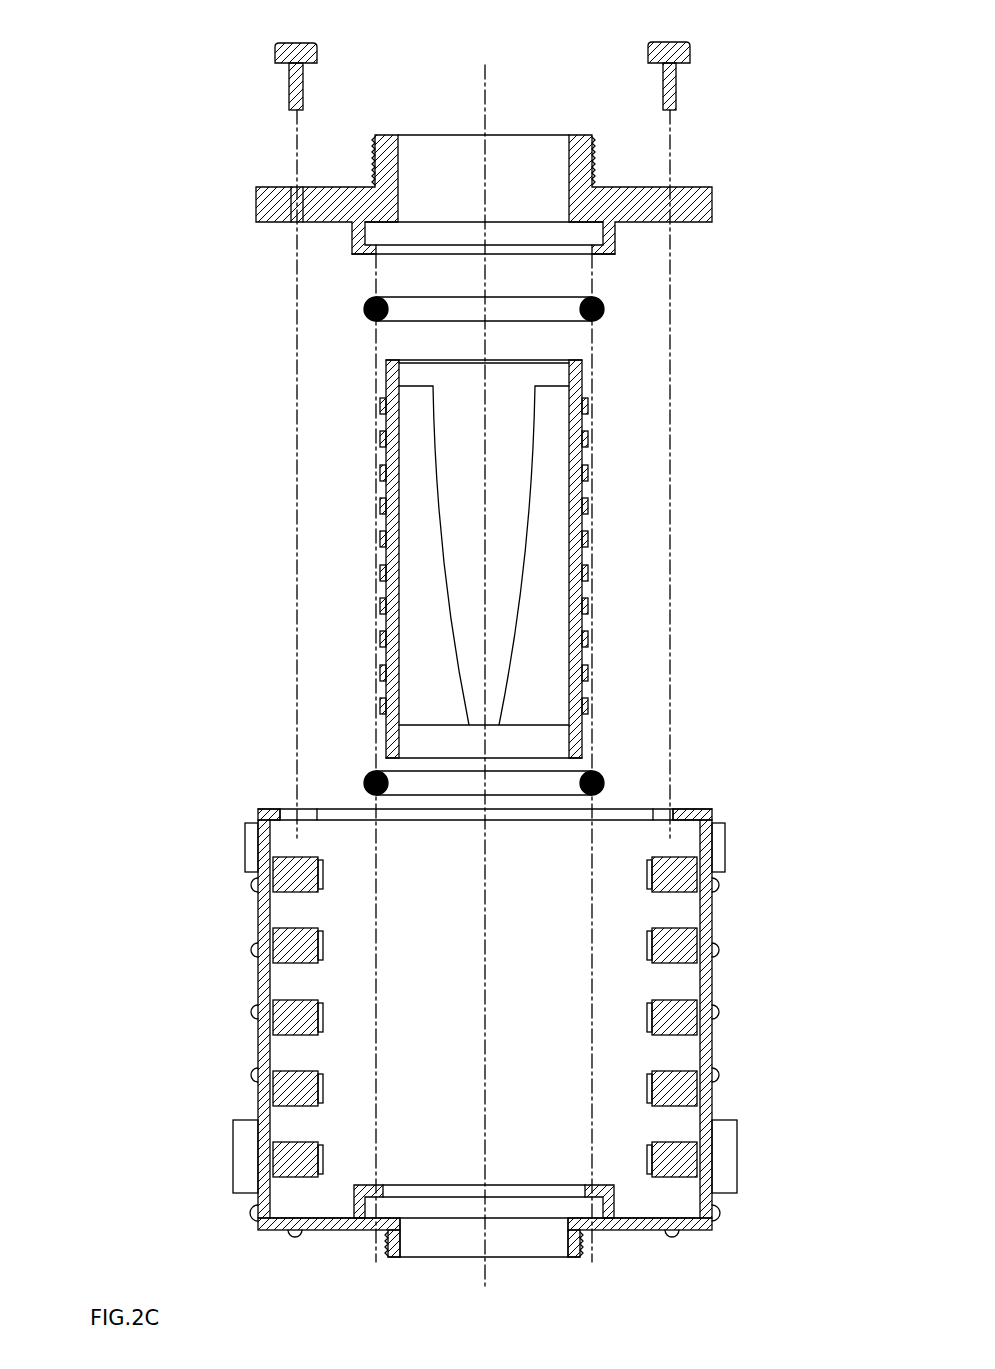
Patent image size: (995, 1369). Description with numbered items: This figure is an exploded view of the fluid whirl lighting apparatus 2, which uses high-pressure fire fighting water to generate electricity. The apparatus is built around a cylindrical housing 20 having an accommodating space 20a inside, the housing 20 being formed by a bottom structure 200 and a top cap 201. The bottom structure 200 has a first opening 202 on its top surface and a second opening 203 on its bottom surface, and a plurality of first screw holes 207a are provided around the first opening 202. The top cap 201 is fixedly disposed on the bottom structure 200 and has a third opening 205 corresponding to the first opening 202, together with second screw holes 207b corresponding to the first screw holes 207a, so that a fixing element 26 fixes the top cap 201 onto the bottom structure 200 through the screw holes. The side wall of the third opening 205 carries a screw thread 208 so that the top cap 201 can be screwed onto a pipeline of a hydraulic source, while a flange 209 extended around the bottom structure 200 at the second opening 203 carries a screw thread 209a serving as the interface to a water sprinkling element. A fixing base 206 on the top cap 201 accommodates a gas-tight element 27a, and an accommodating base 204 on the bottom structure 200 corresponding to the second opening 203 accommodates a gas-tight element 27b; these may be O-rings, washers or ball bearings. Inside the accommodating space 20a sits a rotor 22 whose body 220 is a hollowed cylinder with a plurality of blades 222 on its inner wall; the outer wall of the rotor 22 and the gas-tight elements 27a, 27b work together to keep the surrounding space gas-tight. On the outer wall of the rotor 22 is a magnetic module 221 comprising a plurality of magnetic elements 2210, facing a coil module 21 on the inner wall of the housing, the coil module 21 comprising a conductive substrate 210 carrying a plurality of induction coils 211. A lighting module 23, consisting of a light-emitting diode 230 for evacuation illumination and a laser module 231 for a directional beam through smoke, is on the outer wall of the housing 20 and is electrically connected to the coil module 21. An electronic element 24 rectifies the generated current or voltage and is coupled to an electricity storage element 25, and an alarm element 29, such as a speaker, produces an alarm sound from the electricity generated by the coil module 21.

The fluid whirl lighting apparatus 2 is at (803, 103).
The housing 20 is at (420, 1004).
The accommodating space 20a is at (468, 879).
The bottom structure 200 is at (258, 985).
The top cap 201 is at (256, 207).
The first opening 202 is at (338, 812).
The second opening 203 is at (440, 1240).
The accommodating base 204 is at (358, 1183).
The third opening 205 is at (433, 137).
The fixing base 206 is at (360, 248).
The first screw holes 207a is at (293, 812).
The second screw holes 207b is at (293, 183).
The screw thread 208 is at (592, 158).
The flange 209 is at (583, 1245).
The screw thread 209a is at (573, 1242).
The coil module 21 is at (482, 1007).
The conductive substrate 210 is at (268, 905).
The induction coils 211 is at (312, 963).
The rotor 22 is at (473, 536).
The body 220 is at (573, 728).
The magnetic module 221 is at (445, 556).
The magnetic elements 2210 is at (380, 507).
The blades 222 is at (422, 403).
The lighting module 23 is at (386, 1073).
The light-emitting diode 230 is at (221, 1078).
The laser module 231 is at (221, 1213).
The electronic element 24 is at (245, 840).
The electricity storage element 25 is at (717, 847).
The fixing element 26 is at (294, 44).
The gas-tight element 27a is at (600, 318).
The gas-tight element 27b is at (600, 783).
The alarm element 29 is at (733, 1153).